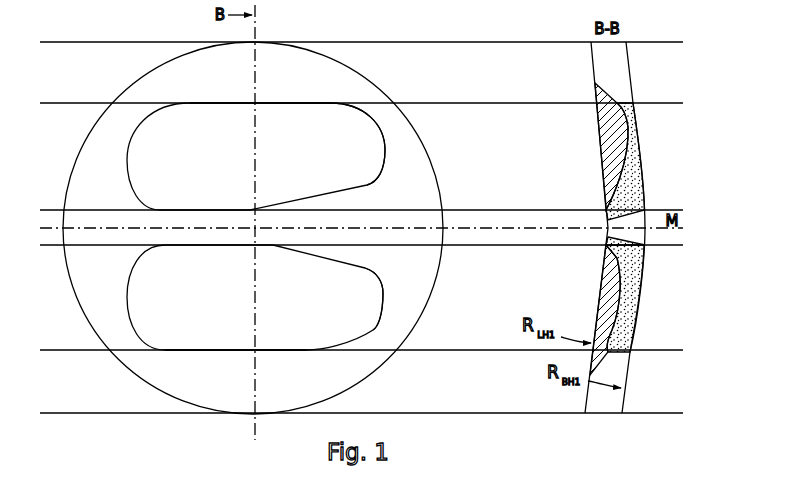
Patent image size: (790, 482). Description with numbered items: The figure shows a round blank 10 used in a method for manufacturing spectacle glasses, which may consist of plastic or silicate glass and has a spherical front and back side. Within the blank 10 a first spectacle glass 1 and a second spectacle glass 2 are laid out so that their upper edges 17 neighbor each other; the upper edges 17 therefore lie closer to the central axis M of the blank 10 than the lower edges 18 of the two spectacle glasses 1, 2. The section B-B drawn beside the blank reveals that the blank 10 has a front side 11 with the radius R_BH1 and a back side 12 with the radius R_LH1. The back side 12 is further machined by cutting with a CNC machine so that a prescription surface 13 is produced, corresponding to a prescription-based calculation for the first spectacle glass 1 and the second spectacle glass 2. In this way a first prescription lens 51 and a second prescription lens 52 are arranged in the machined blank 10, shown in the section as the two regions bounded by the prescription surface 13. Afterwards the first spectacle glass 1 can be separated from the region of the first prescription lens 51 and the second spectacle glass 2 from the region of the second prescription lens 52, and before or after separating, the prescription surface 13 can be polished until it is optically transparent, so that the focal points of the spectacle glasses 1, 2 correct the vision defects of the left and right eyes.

The first spectacle glass 1 is at (372, 136).
The second spectacle glass 2 is at (370, 305).
The blank 10 is at (132, 363).
The front side 11 is at (635, 56).
The back side 12 is at (586, 56).
The prescription surface 13 is at (619, 181).
The upper edges 17 is at (368, 186).
The lower edges 18 is at (279, 102).
The first prescription lens 51 is at (627, 127).
The second prescription lens 52 is at (616, 329).